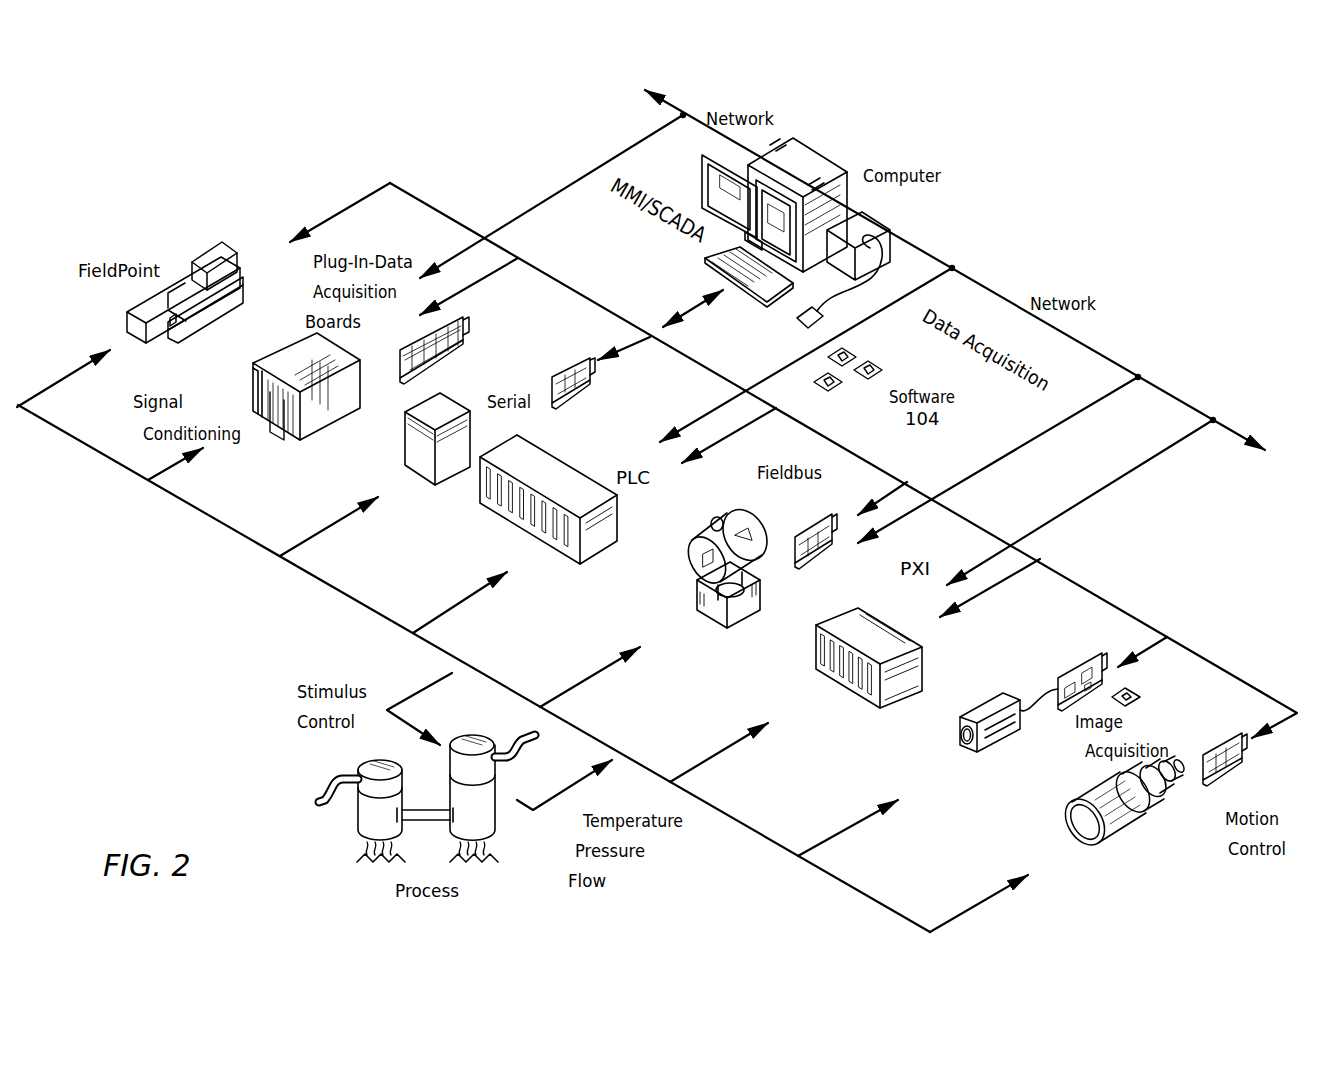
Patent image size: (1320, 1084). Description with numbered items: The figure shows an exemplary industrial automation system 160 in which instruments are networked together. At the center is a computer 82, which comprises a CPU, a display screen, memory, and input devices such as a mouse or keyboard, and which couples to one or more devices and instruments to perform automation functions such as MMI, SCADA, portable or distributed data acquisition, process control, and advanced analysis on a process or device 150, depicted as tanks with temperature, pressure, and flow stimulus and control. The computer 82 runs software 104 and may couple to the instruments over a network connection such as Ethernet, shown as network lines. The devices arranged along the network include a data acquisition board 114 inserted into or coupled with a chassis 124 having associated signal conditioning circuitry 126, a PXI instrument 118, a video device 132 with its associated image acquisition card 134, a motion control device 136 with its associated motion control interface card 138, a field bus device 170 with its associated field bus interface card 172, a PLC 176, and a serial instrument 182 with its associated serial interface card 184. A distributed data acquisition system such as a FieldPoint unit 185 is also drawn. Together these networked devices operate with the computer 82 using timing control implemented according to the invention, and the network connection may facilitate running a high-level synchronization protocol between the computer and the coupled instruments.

The computer 82 is at (813, 158).
The software 104 is at (848, 373).
The data acquisition board 114 is at (466, 314).
The PXI instrument 118 is at (874, 622).
The chassis 124 is at (283, 358).
The signal conditioning circuitry 126 is at (278, 423).
The video device 132 is at (963, 748).
The image acquisition card 134 is at (1072, 688).
The motion control device 136 is at (1115, 832).
The motion control interface card 138 is at (1232, 767).
The process or device 150 is at (332, 796).
The industrial automation system 160 is at (1080, 157).
The field bus device 170 is at (700, 601).
The field bus interface card 172 is at (812, 527).
The PLC 176 is at (563, 470).
The serial instrument 182 is at (405, 466).
The serial interface card 184 is at (566, 372).
The FieldPoint unit 185 is at (198, 253).